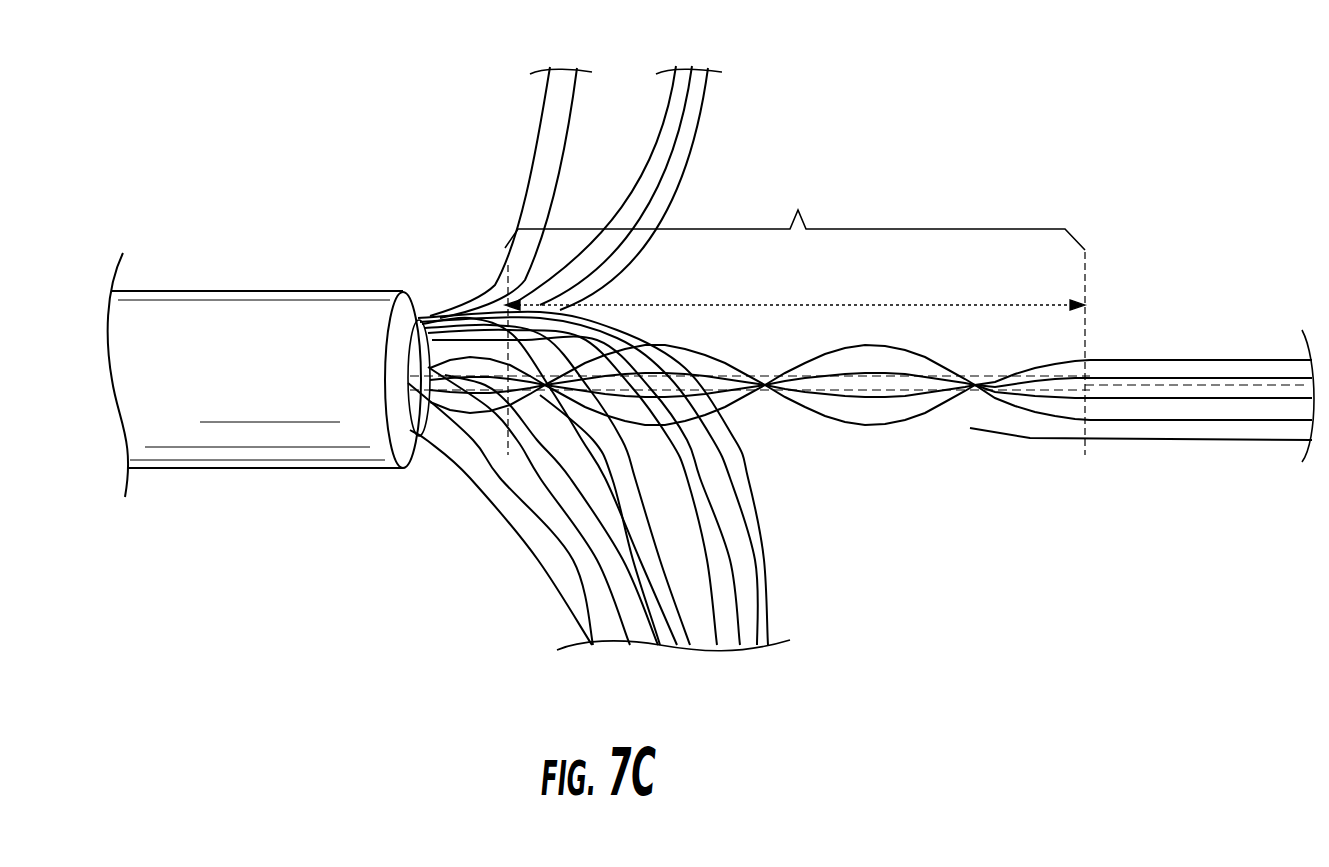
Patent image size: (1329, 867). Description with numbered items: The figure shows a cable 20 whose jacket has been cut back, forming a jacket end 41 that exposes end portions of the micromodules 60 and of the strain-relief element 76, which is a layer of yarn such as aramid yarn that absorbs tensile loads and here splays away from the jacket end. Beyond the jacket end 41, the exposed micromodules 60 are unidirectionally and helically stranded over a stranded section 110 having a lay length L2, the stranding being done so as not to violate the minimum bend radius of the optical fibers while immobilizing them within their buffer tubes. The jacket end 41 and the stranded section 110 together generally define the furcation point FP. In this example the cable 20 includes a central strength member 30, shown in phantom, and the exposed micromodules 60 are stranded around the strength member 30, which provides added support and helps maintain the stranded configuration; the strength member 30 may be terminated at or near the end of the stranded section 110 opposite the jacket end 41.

The cable 20 is at (222, 266).
The jacket end 41 is at (430, 312).
The strain-relief element 76 is at (555, 128).
The micromodules 60 is at (790, 410).
The strength member 30 is at (965, 425).
The stranded section 110 is at (795, 315).
The lay length L2 is at (795, 281).
The furcation point FP is at (883, 195).